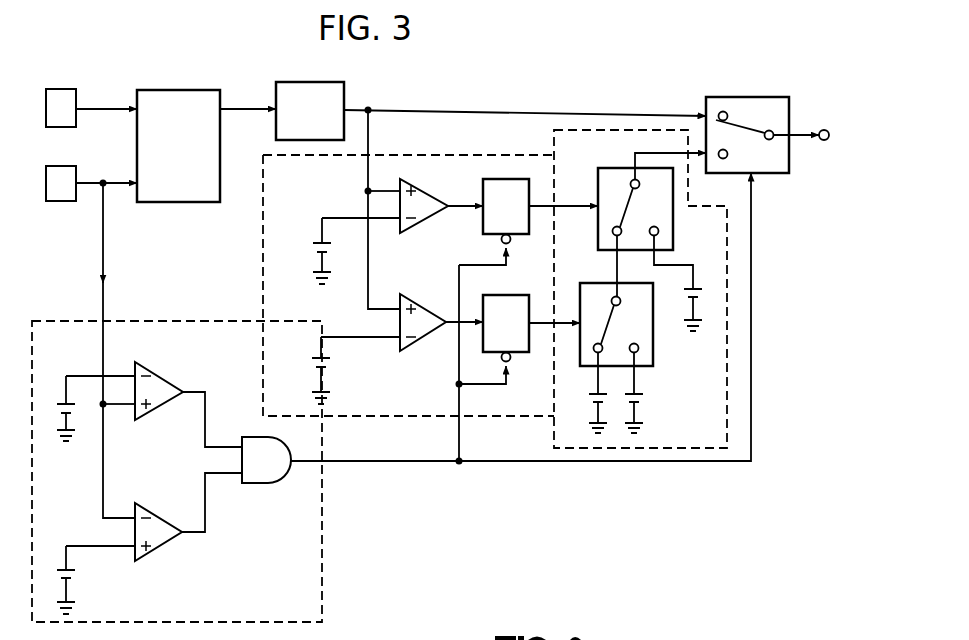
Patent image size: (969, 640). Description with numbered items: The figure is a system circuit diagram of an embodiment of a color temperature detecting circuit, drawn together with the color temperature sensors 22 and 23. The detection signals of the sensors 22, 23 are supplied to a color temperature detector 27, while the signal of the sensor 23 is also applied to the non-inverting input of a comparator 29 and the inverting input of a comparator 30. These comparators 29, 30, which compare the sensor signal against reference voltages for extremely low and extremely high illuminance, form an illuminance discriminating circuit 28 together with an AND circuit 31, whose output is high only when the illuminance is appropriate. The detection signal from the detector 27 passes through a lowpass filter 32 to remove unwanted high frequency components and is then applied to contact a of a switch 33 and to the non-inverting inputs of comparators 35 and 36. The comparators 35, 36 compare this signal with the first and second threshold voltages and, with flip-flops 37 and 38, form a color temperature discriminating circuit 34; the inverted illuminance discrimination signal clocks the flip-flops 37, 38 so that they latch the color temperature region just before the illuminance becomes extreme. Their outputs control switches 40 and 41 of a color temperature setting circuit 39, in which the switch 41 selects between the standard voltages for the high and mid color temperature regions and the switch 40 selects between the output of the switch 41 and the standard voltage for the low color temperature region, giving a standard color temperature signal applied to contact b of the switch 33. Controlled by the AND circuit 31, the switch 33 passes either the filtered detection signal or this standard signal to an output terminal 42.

The color temperature sensor 22 is at (63, 89).
The color temperature sensor 23 is at (63, 201).
The color temperature detector 27 is at (176, 90).
The illuminance discriminating circuit 28 is at (322, 508).
The comparator 29 is at (160, 376).
The comparator 30 is at (153, 513).
The AND circuit 31 is at (265, 485).
The lowpass filter 32 is at (308, 82).
The switch 33 is at (742, 97).
The color temperature discriminating circuit 34 is at (263, 244).
The comparator 35 is at (420, 225).
The comparator 36 is at (411, 346).
The flip-flop 37 is at (485, 181).
The flip-flop 38 is at (503, 294).
The color temperature setting circuit 39 is at (592, 449).
The switch 40 is at (612, 168).
The switch 41 is at (596, 283).
The output terminal 42 is at (823, 129).